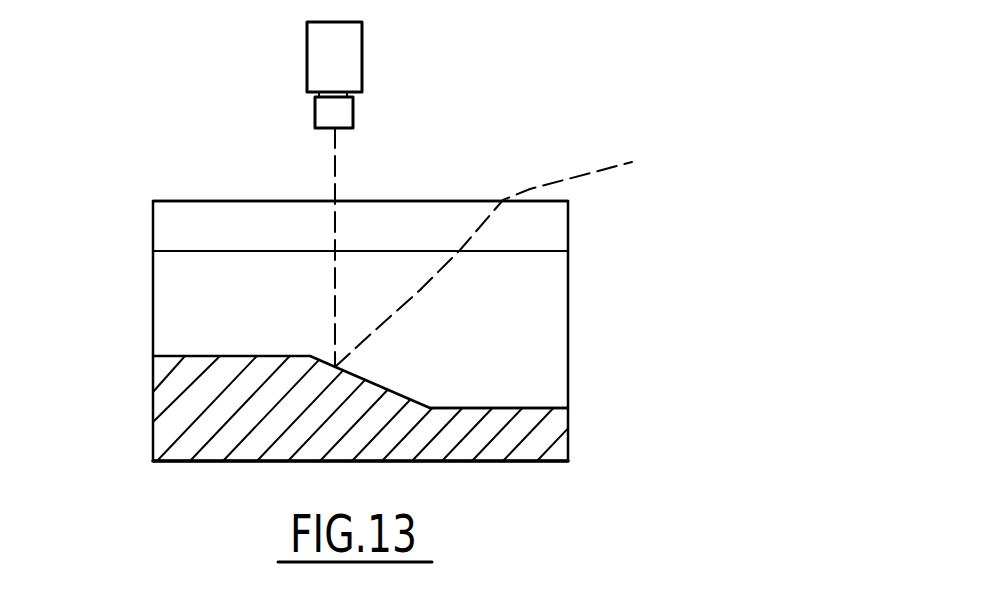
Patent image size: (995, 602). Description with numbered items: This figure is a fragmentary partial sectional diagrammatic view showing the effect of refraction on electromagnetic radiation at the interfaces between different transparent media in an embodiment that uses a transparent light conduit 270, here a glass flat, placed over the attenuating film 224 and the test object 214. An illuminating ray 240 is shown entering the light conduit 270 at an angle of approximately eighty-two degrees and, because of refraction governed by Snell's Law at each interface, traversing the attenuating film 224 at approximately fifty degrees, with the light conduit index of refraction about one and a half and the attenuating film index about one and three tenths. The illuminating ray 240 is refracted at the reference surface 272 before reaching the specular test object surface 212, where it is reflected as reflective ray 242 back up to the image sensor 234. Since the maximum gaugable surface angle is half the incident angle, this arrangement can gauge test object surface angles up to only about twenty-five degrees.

The image sensor 234 is at (362, 62).
The reflective ray 242 is at (335, 168).
The illuminating ray 240 is at (593, 157).
The light conduit 270 is at (207, 189).
The reference surface 272 is at (163, 253).
The attenuating film 224 is at (553, 325).
The test object surface 212 is at (530, 408).
The test object 214 is at (173, 428).